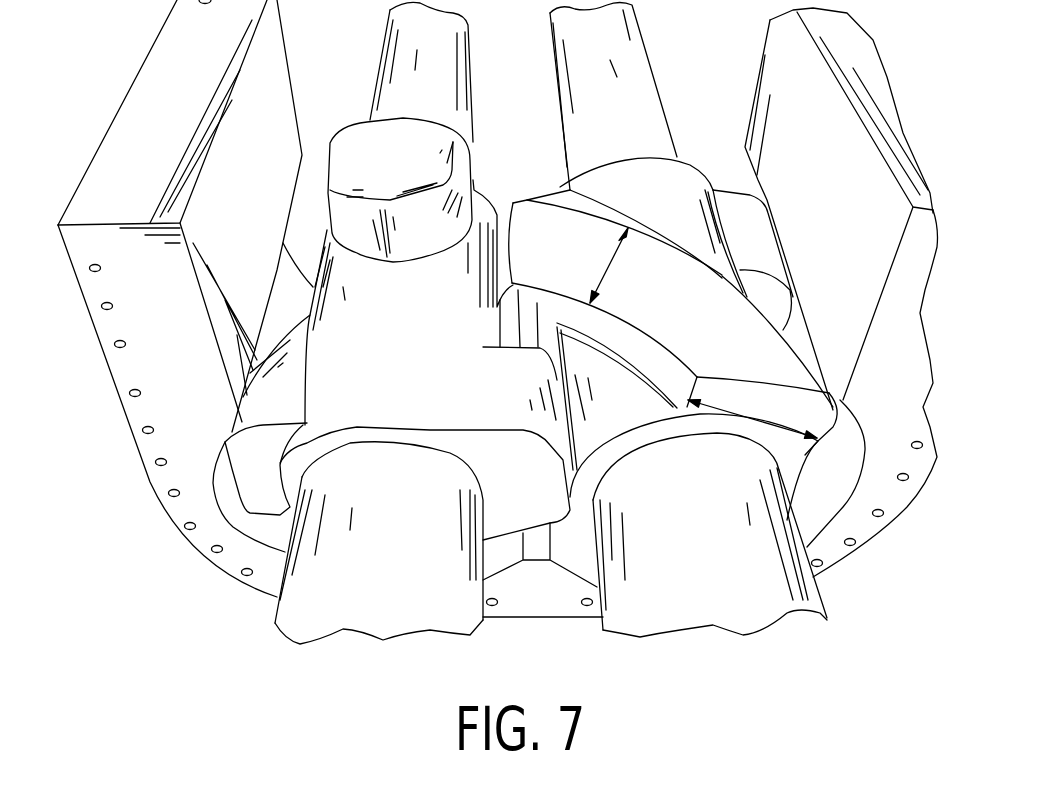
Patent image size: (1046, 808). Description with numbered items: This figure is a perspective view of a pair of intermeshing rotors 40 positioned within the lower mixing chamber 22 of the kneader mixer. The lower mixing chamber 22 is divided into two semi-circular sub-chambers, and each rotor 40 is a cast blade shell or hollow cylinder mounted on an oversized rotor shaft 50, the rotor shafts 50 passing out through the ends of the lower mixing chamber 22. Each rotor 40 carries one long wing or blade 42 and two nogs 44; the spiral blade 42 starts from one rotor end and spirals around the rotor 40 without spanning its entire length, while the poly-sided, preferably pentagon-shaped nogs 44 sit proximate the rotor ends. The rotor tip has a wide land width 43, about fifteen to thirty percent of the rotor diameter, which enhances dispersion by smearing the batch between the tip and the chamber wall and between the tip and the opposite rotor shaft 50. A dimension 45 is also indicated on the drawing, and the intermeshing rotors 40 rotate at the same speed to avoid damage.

The lower mixing chamber 22 is at (186, 132).
The intermeshing rotor 40 is at (398, 361).
The long wing (blade) 42 is at (274, 477).
The land width (rotor tip width) 43 is at (613, 262).
The nog (small blade) 44 is at (405, 171).
The gap width 45 is at (789, 423).
The rotor shaft 50 is at (415, 574).